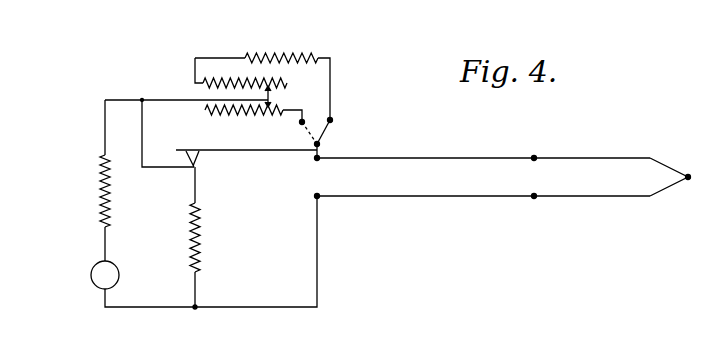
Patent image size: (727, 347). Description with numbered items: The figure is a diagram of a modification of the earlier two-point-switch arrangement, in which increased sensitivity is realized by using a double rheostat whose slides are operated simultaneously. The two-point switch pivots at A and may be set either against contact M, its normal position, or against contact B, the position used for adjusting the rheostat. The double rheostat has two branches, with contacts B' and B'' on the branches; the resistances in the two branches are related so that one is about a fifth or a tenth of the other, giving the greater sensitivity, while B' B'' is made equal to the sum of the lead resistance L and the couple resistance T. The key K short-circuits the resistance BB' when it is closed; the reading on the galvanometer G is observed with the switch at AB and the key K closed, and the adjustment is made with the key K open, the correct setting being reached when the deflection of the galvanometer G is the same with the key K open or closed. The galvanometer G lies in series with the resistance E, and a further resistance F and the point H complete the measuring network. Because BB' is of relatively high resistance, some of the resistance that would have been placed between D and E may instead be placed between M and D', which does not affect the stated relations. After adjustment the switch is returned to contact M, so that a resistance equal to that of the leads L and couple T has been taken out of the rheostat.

The rheostat branch point D is at (146, 90).
The resistance point D' is at (262, 77).
The resistance point E is at (85, 202).
The galvanometer G is at (105, 275).
The resistance F is at (194, 267).
The key K is at (246, 147).
The rheostat contact B'' is at (259, 83).
The rheostat contact B' is at (253, 104).
The switch contact B is at (297, 133).
The switch contact M is at (342, 123).
The switch arm pivot A is at (325, 139).
The lead resistance L is at (483, 173).
The circuit point H is at (470, 198).
The couple resistance T is at (639, 177).